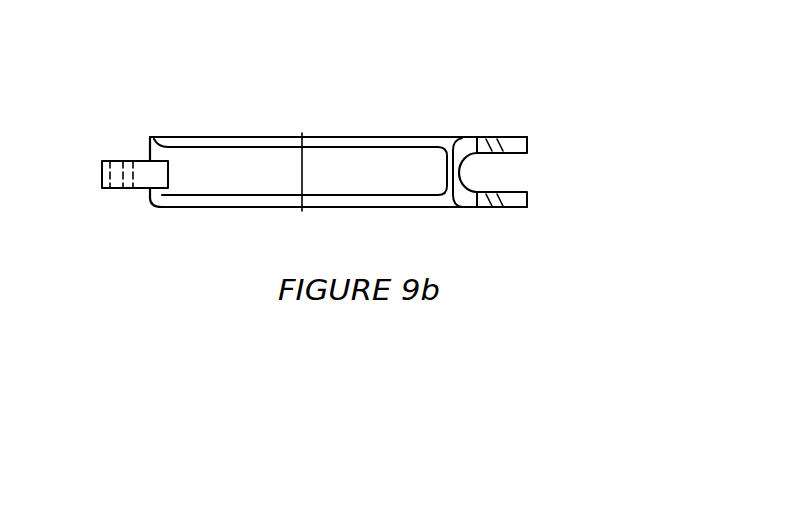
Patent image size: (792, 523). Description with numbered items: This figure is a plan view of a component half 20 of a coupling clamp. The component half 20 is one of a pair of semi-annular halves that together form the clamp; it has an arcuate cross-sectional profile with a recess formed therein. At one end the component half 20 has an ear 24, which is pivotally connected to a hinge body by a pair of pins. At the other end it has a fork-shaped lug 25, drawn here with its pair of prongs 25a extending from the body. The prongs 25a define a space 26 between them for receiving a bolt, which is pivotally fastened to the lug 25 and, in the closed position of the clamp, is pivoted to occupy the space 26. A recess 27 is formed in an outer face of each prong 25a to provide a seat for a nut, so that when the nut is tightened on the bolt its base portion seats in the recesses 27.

The component half 20 is at (622, 93).
The ear 24 is at (148, 178).
The fork-shaped lug 25 is at (455, 140).
The prongs 25a is at (521, 140).
The space 26 is at (507, 165).
The recess 27 is at (485, 147).